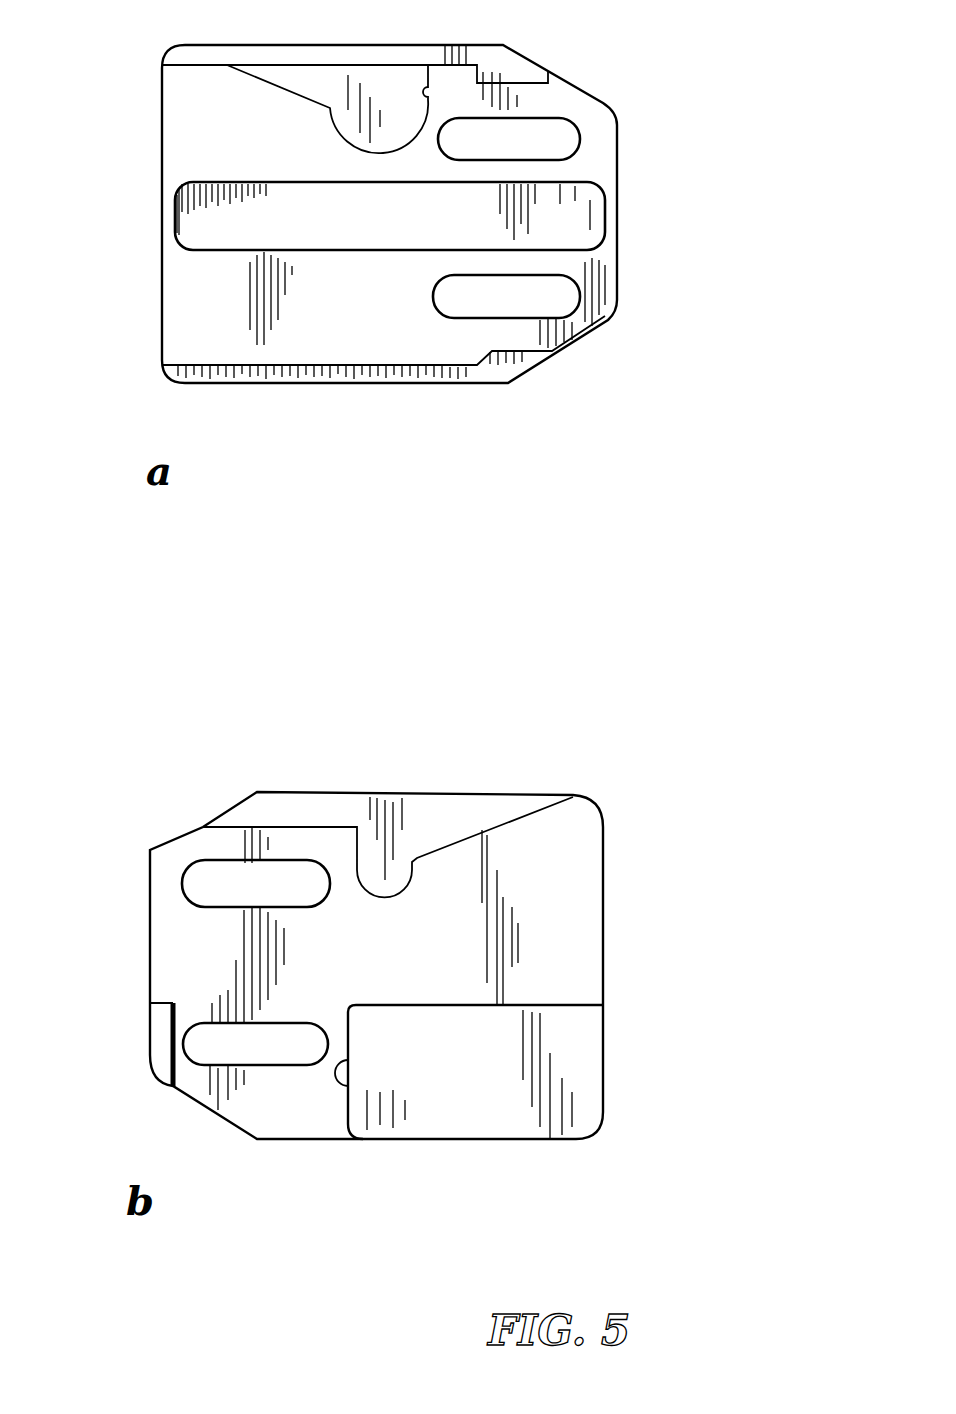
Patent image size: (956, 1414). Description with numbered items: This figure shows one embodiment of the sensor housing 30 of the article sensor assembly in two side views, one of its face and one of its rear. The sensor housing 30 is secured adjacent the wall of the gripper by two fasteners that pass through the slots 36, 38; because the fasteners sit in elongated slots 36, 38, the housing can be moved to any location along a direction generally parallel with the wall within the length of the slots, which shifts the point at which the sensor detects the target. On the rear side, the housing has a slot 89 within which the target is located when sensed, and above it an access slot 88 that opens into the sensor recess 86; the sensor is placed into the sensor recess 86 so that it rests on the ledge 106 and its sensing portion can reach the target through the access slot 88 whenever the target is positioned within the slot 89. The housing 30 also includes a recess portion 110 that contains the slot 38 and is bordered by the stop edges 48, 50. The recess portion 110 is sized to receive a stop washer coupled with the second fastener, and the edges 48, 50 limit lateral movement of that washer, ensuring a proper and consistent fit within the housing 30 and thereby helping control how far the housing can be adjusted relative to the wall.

The sensor housing 30 is at (149, 319).
The slot 36 is at (552, 133).
The slot 38 is at (550, 300).
The stop edge 48 is at (178, 1017).
The stop edge 50 is at (355, 1066).
The sensor recess 86 is at (381, 84).
The access slot 88 is at (353, 207).
The slot 89 is at (576, 228).
The ledge 106 is at (201, 176).
The recess portion 110 is at (328, 1020).